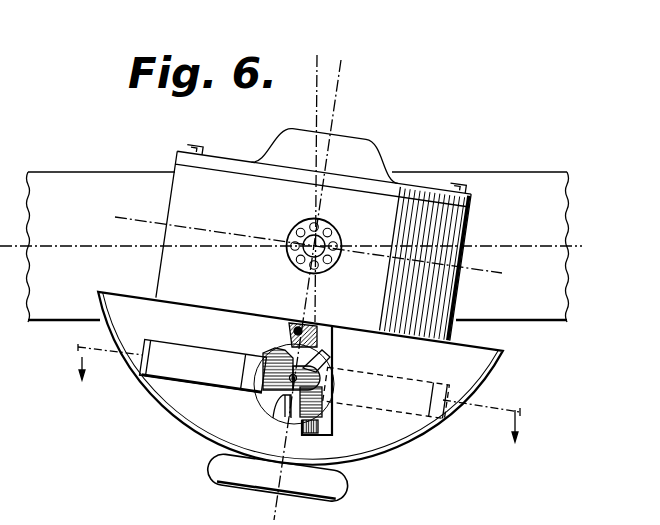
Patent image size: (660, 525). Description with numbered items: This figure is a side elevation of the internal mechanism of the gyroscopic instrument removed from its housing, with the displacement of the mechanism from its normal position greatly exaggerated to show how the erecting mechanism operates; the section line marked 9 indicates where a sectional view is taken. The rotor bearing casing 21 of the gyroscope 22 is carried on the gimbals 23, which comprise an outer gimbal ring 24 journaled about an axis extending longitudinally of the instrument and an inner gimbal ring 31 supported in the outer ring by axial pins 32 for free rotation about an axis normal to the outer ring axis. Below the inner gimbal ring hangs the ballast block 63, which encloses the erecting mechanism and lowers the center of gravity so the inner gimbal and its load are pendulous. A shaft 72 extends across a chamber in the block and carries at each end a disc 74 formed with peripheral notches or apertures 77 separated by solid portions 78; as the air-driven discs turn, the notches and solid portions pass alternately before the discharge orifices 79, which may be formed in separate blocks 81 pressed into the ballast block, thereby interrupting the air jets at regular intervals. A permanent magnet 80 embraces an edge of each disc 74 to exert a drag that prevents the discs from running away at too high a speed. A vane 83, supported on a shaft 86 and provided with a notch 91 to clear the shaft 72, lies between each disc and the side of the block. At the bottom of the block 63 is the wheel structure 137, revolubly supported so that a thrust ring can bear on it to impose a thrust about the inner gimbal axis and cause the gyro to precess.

The rotor bearing casing 21 is at (388, 170).
The gyroscope 22 is at (432, 183).
The gimbals 23 is at (528, 185).
The outer gimbal ring 24 is at (528, 230).
The inner gimbal ring 31 is at (182, 203).
The axial pins 32 is at (300, 231).
The ballast block 63 is at (390, 433).
The shaft 72 is at (250, 387).
The discs 74 is at (322, 362).
The apertures 77 is at (276, 407).
The solid portions 78 is at (330, 405).
The discharge orifices 79 is at (292, 418).
The permanent magnet 80 is at (162, 372).
The blocks 81 is at (305, 430).
The vane 83 is at (332, 430).
The shaft 86 is at (298, 325).
The notches 91 is at (285, 352).
The wheel structure 137 is at (232, 485).
The section line 9- 9 is at (297, 392).